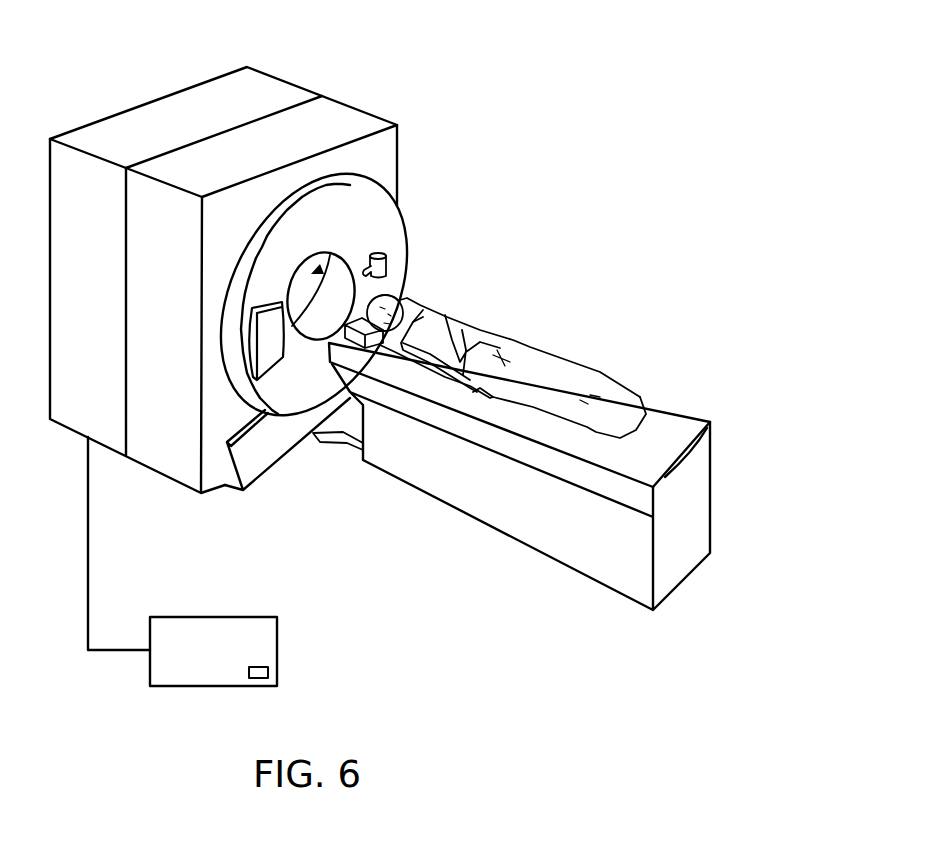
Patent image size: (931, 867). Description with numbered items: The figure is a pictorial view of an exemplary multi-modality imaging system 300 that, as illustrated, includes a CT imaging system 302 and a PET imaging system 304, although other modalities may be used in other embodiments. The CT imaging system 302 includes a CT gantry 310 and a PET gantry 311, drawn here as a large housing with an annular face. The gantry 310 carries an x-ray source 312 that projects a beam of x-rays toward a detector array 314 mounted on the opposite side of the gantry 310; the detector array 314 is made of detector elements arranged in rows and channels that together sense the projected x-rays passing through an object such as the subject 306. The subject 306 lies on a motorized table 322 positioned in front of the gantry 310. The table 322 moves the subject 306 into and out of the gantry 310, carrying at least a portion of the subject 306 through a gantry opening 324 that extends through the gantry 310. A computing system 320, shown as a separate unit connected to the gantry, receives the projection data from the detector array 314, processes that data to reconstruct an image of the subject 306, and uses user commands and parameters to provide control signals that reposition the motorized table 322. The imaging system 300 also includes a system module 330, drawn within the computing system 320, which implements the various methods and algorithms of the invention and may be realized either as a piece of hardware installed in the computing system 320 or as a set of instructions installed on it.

The multi-modality imaging system 300 is at (536, 121).
The CT imaging system 302 is at (187, 472).
The PET imaging system 304 is at (72, 415).
The subject 306 is at (458, 330).
The CT gantry 310 is at (388, 152).
The PET gantry 311 is at (288, 78).
The x-ray source 312 is at (390, 258).
The detector array 314 is at (268, 350).
The computing system 320 is at (277, 643).
The motorized table 322 is at (478, 508).
The gantry opening 324 is at (316, 271).
The system module 330 is at (268, 672).